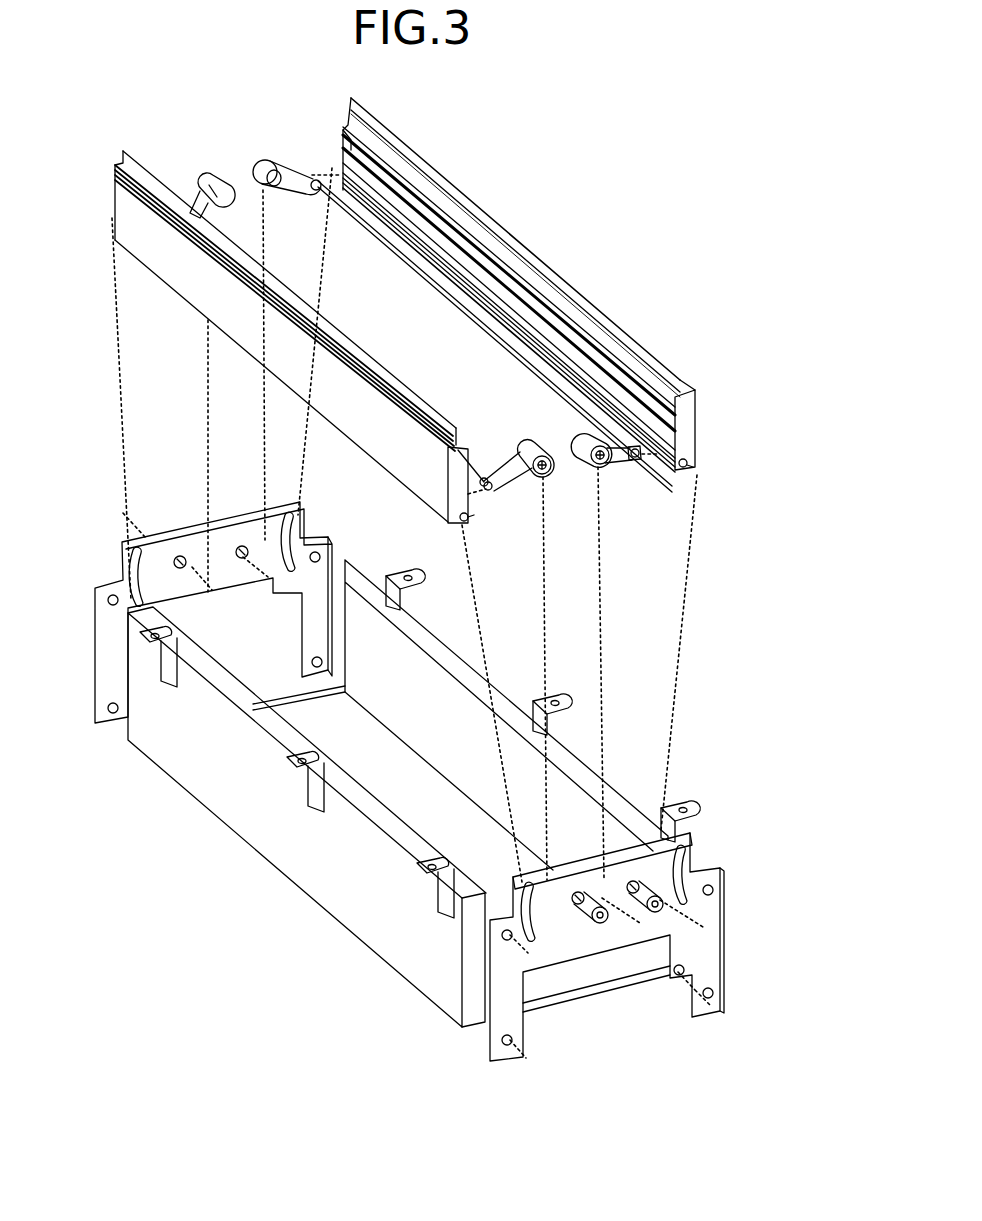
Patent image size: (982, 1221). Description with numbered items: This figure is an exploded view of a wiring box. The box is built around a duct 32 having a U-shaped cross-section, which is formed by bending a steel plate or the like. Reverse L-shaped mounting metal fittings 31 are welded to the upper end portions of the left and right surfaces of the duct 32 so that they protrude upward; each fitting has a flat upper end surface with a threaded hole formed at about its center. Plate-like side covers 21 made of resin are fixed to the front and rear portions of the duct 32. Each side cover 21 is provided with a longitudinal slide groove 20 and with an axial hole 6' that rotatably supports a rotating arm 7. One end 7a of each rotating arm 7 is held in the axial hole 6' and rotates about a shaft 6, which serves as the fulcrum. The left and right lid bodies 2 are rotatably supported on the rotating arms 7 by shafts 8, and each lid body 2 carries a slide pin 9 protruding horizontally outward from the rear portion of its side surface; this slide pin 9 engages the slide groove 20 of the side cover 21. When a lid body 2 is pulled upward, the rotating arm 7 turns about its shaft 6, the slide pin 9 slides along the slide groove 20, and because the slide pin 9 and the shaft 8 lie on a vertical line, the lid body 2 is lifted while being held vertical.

The lid body 2 is at (170, 258).
The shaft 6 is at (620, 883).
The axial hole 6' is at (218, 517).
The rotating arm 7 is at (206, 178).
The one end of rotating arm 7a is at (548, 454).
The shaft of rotating arm 8 is at (468, 306).
The slide pin 9 is at (462, 519).
The slide groove 20 is at (135, 576).
The side cover 21 is at (225, 581).
The mounting metal fitting 31 is at (142, 603).
The duct 32 is at (248, 800).